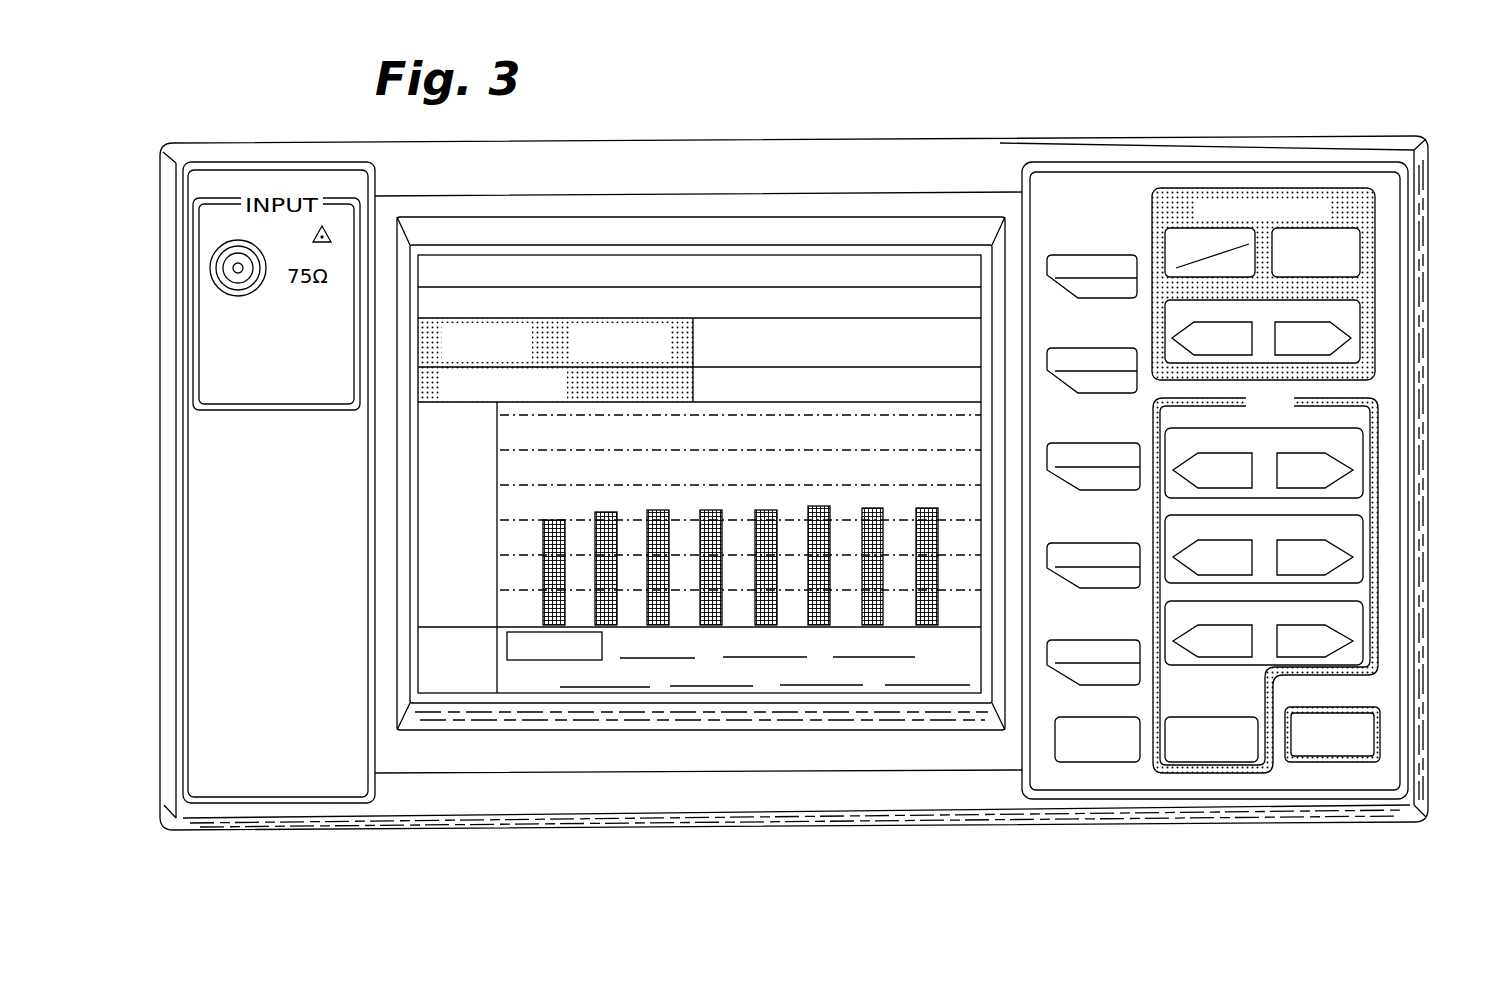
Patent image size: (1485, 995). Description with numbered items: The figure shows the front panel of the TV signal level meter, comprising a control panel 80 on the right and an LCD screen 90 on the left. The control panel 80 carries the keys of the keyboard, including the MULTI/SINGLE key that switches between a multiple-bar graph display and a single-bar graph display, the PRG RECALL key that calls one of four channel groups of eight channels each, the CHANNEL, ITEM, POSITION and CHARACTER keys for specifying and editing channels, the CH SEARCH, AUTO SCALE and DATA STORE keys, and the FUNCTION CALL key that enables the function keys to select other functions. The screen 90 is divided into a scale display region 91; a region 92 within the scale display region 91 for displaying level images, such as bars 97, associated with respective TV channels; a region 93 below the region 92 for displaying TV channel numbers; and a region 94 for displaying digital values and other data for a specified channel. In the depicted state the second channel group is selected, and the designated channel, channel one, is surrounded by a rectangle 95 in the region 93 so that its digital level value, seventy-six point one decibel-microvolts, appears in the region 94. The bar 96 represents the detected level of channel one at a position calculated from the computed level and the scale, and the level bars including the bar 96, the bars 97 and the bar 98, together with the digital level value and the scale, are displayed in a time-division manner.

The control panel 80 is at (1127, 196).
The LCD screen 90 is at (650, 479).
The scale display region 91 is at (432, 533).
The level image display region 92 is at (640, 523).
The channel number display region 93 is at (663, 748).
The specified channel data display region 94 is at (429, 402).
The rectangle 95 is at (536, 662).
The bar 96 is at (553, 519).
The bars 97 is at (867, 508).
The level bar 98 is at (922, 507).